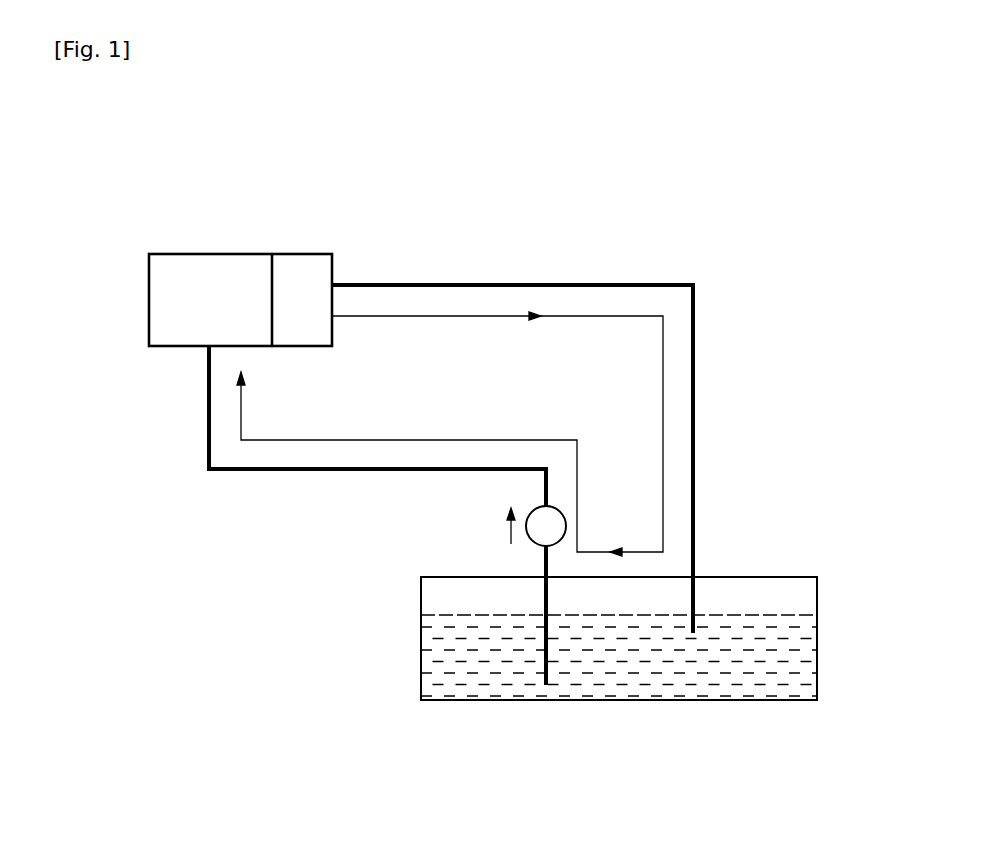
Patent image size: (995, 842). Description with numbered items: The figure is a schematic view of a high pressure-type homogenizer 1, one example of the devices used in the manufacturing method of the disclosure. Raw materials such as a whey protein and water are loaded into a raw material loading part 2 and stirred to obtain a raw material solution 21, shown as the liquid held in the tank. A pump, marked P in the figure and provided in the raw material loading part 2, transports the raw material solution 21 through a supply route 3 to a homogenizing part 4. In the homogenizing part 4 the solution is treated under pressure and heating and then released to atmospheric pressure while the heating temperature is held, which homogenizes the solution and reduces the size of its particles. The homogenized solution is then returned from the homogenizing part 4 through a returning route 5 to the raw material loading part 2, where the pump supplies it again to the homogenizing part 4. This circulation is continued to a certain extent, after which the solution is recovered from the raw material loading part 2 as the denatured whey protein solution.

The high pressure-type homogenizer 1 is at (640, 185).
The raw material loading part 2 is at (760, 577).
The raw material solution 21 is at (613, 690).
The supply route 3 is at (364, 471).
The homogenizing part 4 is at (242, 254).
The returning route 5 is at (514, 285).